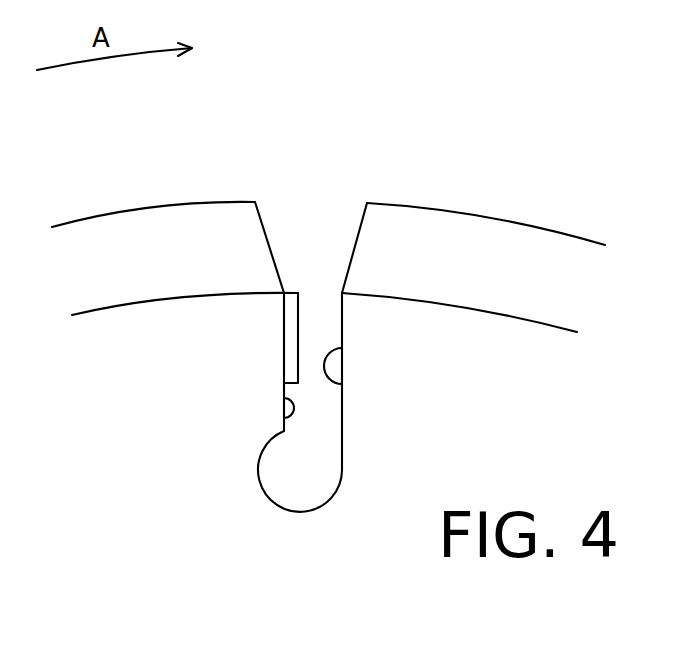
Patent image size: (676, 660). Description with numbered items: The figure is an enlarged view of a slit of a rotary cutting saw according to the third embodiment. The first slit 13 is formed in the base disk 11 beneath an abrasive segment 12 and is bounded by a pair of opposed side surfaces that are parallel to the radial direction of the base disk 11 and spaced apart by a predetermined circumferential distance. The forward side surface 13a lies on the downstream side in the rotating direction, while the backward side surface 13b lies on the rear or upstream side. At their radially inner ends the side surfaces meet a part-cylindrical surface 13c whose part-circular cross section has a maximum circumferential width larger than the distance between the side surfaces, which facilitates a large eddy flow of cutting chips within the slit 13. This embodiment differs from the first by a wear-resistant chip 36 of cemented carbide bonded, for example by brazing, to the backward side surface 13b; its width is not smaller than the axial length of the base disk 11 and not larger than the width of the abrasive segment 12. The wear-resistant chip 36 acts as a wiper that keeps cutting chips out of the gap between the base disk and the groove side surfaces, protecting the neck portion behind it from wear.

The base disk 11 is at (128, 325).
The abrasive segment 12 is at (518, 238).
The first slit 13 is at (312, 302).
The forward side surface 13a is at (343, 348).
The backward side surface 13b is at (284, 398).
The part-cylindrical surface 13c is at (268, 498).
The wear-resistant chip 36 is at (287, 340).